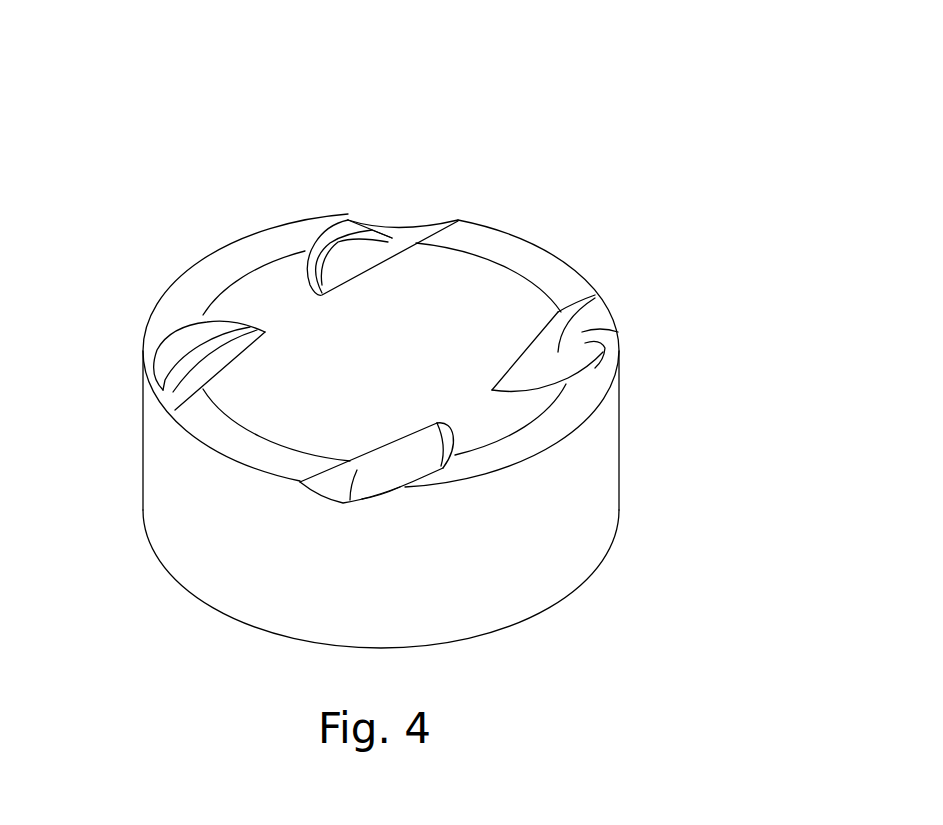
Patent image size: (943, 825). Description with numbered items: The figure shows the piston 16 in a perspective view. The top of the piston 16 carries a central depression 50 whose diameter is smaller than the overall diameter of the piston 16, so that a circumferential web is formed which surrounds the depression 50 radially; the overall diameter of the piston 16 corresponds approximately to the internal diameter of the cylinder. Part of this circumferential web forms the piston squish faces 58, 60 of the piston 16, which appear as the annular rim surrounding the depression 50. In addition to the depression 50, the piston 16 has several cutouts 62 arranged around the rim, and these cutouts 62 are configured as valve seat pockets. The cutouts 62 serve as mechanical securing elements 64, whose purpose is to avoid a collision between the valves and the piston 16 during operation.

The piston 16 is at (494, 104).
The depression 50 is at (497, 300).
The piston squish face 58 is at (268, 248).
The piston squish face 60 is at (530, 447).
The cutout 62 is at (385, 238).
The mechanical securing element 64 is at (364, 240).